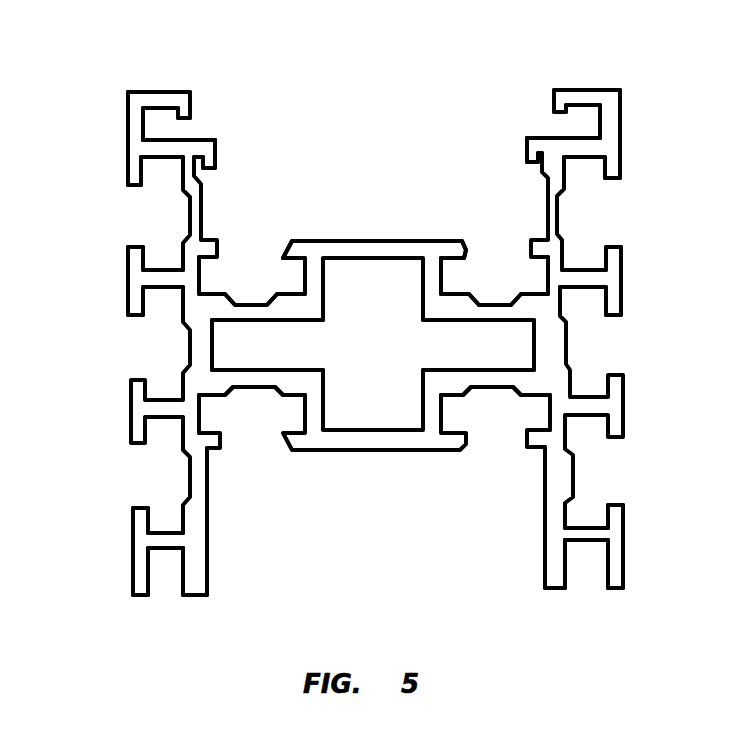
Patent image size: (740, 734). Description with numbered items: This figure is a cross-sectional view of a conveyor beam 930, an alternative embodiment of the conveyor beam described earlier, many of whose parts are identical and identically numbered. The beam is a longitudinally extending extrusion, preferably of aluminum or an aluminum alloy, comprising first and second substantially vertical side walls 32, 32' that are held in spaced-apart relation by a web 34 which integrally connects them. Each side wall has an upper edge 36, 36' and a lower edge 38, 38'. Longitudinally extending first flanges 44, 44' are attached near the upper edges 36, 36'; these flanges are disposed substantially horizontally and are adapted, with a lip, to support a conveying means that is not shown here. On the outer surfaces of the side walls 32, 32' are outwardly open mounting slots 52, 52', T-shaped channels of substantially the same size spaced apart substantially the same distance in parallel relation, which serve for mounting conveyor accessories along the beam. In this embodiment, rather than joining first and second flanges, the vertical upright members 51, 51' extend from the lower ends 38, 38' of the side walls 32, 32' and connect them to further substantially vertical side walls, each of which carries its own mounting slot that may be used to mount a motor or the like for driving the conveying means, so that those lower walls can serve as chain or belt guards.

The conveyor beam 930 is at (113, 155).
The first flange 44 is at (171, 109).
The upper edge of first side wall 36 is at (209, 129).
The mounting slot 52 is at (117, 259).
The first side wall 32 is at (260, 372).
The web 34 is at (388, 236).
The upright member 51 is at (119, 551).
The lower edge of first side wall 38 is at (227, 525).
The first flange 44' is at (573, 106).
The upper edge of second side wall 36' is at (539, 124).
The mounting slot 52' is at (627, 241).
The second side wall 32' is at (486, 372).
The upright member 51' is at (626, 546).
The lower edge of second side wall 38' is at (515, 521).